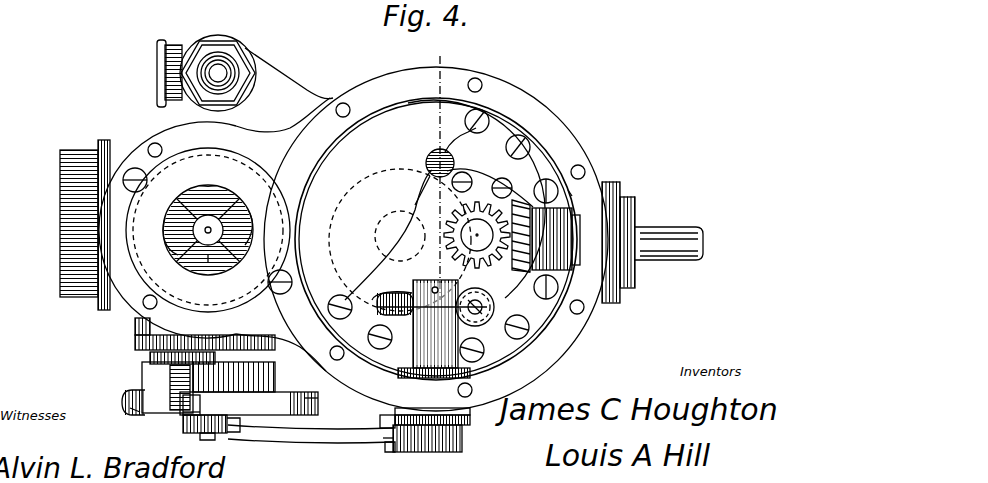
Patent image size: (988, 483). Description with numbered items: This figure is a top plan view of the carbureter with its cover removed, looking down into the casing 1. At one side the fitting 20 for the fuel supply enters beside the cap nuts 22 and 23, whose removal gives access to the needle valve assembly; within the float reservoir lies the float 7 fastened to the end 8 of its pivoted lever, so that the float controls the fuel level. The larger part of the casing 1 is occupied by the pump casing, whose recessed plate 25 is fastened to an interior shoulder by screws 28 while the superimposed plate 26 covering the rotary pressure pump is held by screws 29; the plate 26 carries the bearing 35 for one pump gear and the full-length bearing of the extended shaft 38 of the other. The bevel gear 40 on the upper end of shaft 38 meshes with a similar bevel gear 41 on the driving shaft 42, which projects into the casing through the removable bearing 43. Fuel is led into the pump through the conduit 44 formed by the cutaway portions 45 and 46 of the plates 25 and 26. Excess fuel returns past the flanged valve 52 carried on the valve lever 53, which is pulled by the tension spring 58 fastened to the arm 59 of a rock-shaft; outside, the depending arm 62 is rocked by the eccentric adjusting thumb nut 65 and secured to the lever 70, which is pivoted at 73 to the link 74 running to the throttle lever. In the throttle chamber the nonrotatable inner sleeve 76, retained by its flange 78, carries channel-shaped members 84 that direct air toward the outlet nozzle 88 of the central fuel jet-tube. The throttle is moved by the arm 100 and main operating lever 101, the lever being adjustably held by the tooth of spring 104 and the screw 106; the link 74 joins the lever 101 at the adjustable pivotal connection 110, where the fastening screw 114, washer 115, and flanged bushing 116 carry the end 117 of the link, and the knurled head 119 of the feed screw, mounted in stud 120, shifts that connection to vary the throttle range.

The casing 1 is at (362, 90).
The float 7 is at (330, 153).
The end of pivoted lever 8 is at (297, 167).
The fitting 20 is at (157, 78).
The cap nut 22 is at (241, 62).
The cap nut 23 is at (262, 78).
The recessed plate 25 is at (570, 192).
The superimposed plate 26 is at (472, 178).
The screws 28 is at (543, 165).
The screws 29 is at (471, 187).
The bearing 35 is at (404, 246).
The extended shaft 38 is at (448, 252).
The bevel gear 40 is at (470, 214).
The bevel gear 41 is at (505, 174).
The driving shaft 42 is at (660, 233).
The removable bearing 43 is at (573, 202).
The conduit 44 is at (427, 160).
The cutaway portion 45 is at (455, 153).
The cutaway portion 46 is at (428, 178).
The flanged valve 52 is at (495, 306).
The valve lever 53 is at (483, 322).
The tension spring 58 is at (385, 313).
The arm 59 is at (398, 293).
The depending arm 62 is at (466, 420).
The adjusting thumb nut 65 is at (392, 448).
The lever 70 is at (382, 421).
The pivotal connection 73 is at (384, 444).
The link 74 is at (320, 437).
The inner sleeve 76 is at (208, 196).
The flange 78 is at (198, 165).
The channel shaped members 84 is at (168, 232).
The outlet nozzle 88 is at (209, 264).
The arm or lever 100 is at (145, 370).
The main operating lever 101 is at (318, 410).
The spring 104 is at (200, 406).
The screw 106 is at (150, 358).
The adjustable pivotal connection 110 is at (190, 426).
The fastening screw 114 is at (208, 433).
The washer 115 is at (226, 423).
The flanged bushing 116 is at (182, 412).
The end of link 117 is at (184, 418).
The knurled head 119 is at (128, 396).
The stud 120 is at (130, 409).